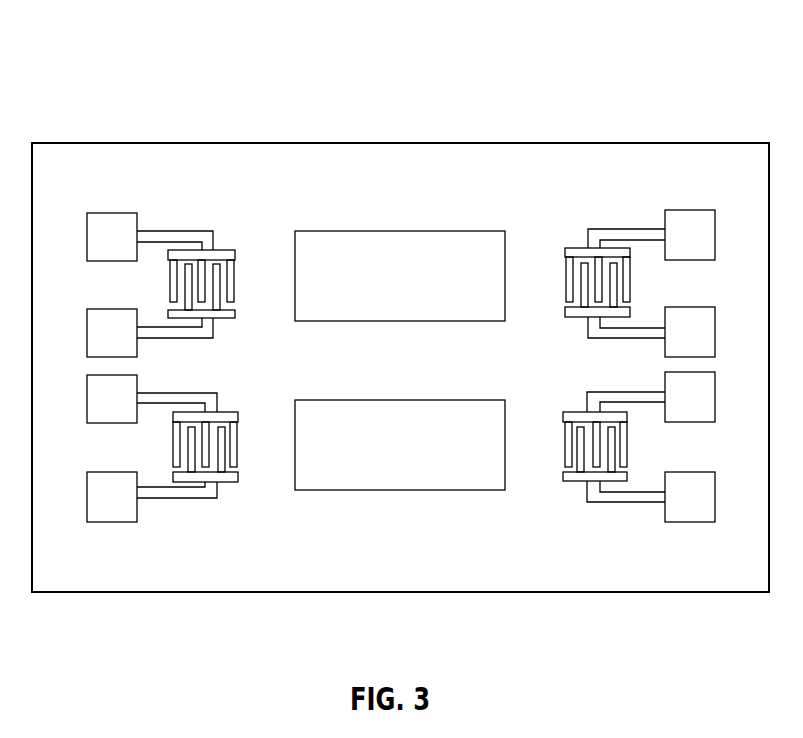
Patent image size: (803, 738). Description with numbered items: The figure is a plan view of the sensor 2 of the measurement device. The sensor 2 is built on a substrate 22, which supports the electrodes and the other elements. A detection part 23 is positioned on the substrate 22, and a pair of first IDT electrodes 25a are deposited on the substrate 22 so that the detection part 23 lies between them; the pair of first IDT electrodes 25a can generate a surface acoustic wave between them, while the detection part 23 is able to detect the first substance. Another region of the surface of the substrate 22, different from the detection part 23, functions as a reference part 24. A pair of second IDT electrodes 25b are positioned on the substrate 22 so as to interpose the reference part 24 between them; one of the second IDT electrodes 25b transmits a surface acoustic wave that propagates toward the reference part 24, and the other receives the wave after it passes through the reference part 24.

The sensor 2 is at (77, 53).
The substrate 22 is at (100, 143).
The detection part 23 is at (352, 231).
The reference part 24 is at (352, 400).
The first IDT electrodes 25a is at (213, 252).
The second IDT electrodes 25b is at (218, 460).